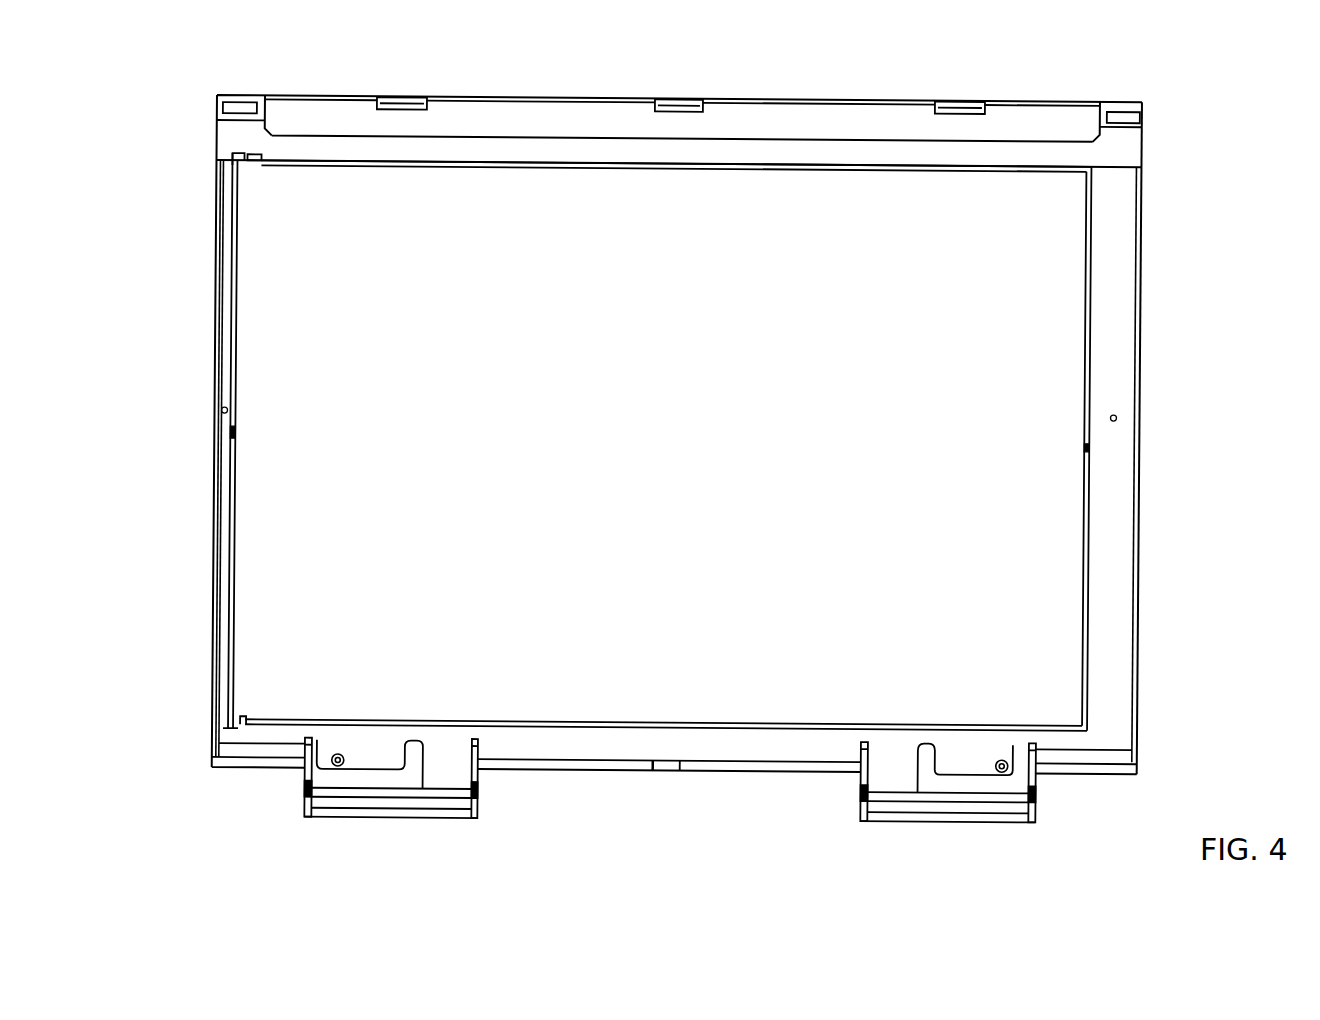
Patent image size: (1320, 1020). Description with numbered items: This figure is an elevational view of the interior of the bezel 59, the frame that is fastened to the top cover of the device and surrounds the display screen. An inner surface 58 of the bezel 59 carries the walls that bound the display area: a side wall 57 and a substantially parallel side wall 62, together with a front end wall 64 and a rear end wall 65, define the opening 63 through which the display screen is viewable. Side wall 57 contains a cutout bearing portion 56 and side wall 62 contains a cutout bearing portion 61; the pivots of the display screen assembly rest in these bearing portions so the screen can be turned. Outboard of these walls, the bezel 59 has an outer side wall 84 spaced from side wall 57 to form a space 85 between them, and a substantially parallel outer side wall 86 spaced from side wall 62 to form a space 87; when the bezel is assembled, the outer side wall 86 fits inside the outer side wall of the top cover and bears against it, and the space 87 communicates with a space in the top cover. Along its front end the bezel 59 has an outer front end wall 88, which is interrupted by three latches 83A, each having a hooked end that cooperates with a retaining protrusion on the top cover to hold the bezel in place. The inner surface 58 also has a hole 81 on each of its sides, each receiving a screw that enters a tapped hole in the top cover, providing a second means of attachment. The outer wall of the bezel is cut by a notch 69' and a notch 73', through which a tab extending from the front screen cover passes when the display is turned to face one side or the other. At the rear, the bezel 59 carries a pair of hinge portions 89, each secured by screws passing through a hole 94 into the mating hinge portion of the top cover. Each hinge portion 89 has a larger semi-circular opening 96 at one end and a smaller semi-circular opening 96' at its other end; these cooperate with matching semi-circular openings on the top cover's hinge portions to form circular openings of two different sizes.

The bezel 59 is at (214, 198).
The outer side wall 86 is at (1138, 440).
The outer front end wall 88 is at (578, 97).
The latches 83A is at (673, 109).
The front end wall 64 is at (762, 167).
The outer side wall 84 is at (212, 338).
The space 85 is at (226, 362).
The notch 73' is at (285, 189).
The side wall 57 is at (228, 480).
The opening 63 is at (234, 596).
The space 87 is at (1106, 632).
The rear end wall 65 is at (786, 729).
The inner surface 58 is at (222, 694).
The notch 69' is at (309, 692).
The cutout bearing portion 56 is at (236, 432).
The cutout bearing portion 61 is at (1083, 445).
The side wall 62 is at (1092, 283).
The hole 81 is at (228, 409).
The semi-circular opening 96' is at (674, 787).
The semi-circular opening 96 is at (669, 792).
The hinge portions 89 is at (420, 818).
The hole 94 is at (346, 758).